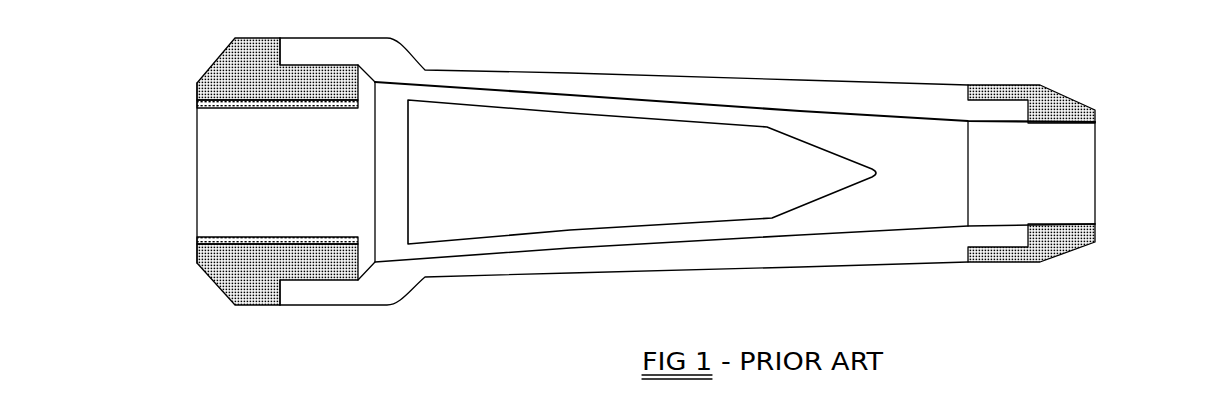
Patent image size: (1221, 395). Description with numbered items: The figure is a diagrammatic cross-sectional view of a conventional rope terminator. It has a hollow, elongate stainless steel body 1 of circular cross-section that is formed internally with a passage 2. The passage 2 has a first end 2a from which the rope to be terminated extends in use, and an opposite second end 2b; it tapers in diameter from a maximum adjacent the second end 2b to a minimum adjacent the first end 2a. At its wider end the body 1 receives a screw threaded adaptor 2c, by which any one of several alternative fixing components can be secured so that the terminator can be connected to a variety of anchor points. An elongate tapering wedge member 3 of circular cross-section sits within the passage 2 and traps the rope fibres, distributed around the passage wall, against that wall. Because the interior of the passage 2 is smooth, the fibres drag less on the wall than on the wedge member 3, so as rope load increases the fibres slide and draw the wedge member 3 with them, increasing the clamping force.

The body 1 is at (725, 94).
The passage 2 is at (668, 100).
The first end 2a is at (1023, 127).
The second end 2b is at (390, 117).
The screw threaded adaptor 2c is at (217, 278).
The wedge member 3 is at (667, 177).